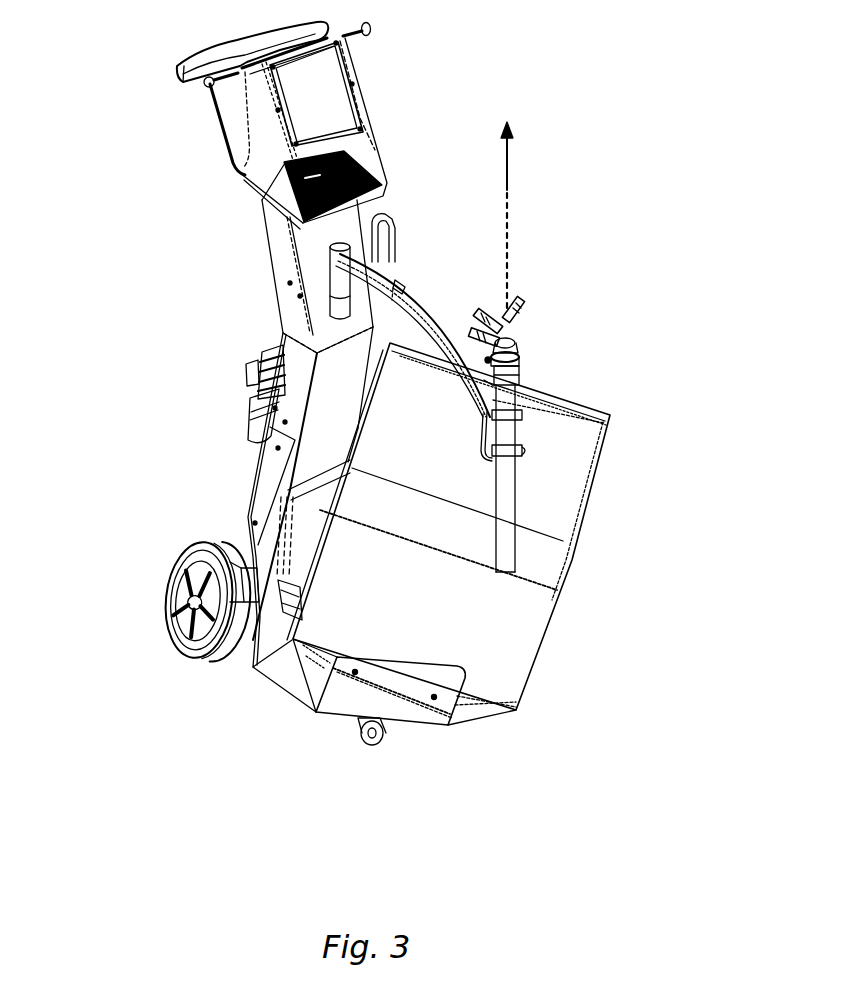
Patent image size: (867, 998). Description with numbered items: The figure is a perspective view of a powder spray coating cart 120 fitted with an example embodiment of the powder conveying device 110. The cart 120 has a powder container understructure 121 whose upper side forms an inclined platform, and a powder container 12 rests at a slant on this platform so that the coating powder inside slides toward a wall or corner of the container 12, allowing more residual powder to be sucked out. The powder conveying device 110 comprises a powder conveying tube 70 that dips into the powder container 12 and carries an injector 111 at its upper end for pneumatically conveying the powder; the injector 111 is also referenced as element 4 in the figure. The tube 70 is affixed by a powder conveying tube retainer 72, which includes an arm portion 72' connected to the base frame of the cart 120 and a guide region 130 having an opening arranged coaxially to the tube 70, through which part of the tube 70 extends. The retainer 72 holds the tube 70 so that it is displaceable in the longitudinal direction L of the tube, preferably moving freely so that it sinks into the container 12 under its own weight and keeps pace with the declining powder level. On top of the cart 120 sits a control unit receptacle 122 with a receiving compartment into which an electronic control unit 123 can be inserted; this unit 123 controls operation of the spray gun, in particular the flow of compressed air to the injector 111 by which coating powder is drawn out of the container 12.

The powder spray coating cart 120 is at (50, 83).
The control unit receptacle 122 is at (258, 158).
The electronic control unit 123 is at (318, 113).
The powder conveying tube retainer 72 is at (461, 311).
The nozzle 4 is at (594, 302).
The injector 111 is at (465, 383).
The arm portion 72' is at (614, 321).
The guide region 130 is at (503, 440).
The powder conveying tube 70 is at (550, 490).
The powder container 12 is at (518, 653).
The powder conveying device 110 is at (461, 472).
The powder container understructure 121 is at (312, 670).
The longitudinal direction L is at (506, 200).